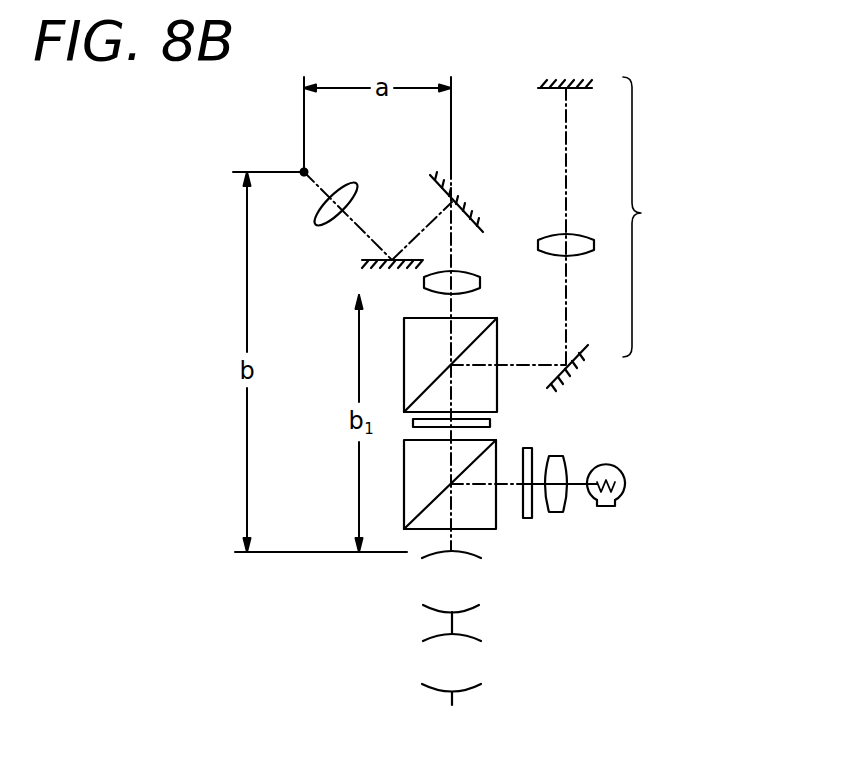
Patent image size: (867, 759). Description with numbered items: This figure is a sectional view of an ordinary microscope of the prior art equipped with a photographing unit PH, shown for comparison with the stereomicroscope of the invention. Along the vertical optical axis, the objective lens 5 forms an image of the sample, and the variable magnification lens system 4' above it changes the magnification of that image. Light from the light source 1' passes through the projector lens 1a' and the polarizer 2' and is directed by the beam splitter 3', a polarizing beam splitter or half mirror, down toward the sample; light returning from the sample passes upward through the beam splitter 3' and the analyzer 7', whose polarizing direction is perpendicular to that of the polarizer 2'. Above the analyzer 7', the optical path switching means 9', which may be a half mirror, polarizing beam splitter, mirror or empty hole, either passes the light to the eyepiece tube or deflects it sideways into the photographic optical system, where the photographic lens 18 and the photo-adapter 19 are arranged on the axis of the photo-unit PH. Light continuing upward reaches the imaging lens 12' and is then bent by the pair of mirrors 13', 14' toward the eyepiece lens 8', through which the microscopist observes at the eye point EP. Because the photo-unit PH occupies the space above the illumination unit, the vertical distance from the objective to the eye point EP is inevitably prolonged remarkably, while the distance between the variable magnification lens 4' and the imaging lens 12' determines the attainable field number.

The light source 1' is at (620, 466).
The projector lens 1a' is at (580, 465).
The polarizer 2' is at (549, 463).
The beam splitter 3' is at (468, 501).
The variable magnification lens system 4' is at (484, 596).
The objective lens 5 is at (470, 660).
The analyzer 7' is at (478, 416).
The eyepiece lens 8' is at (338, 180).
The optical path switching means 9' is at (477, 363).
The imaging lens 12' is at (486, 289).
The mirror 13' is at (425, 199).
The mirror 14' is at (362, 261).
The photographic lens 18 is at (579, 236).
The photo-adapter 19 is at (556, 91).
The TV photo-unit PH is at (653, 217).
The eye point EP is at (302, 170).